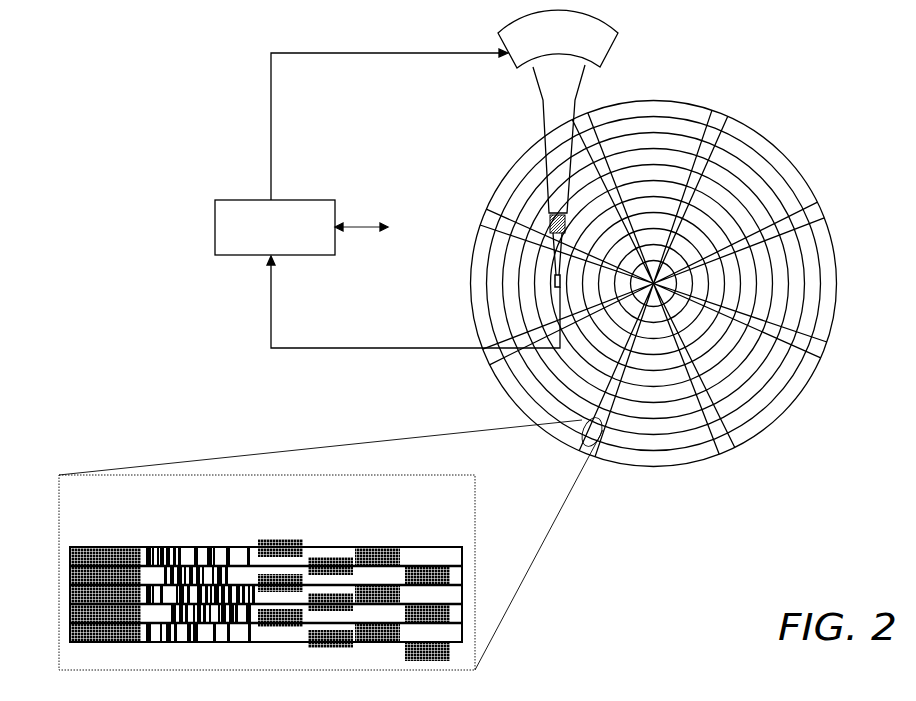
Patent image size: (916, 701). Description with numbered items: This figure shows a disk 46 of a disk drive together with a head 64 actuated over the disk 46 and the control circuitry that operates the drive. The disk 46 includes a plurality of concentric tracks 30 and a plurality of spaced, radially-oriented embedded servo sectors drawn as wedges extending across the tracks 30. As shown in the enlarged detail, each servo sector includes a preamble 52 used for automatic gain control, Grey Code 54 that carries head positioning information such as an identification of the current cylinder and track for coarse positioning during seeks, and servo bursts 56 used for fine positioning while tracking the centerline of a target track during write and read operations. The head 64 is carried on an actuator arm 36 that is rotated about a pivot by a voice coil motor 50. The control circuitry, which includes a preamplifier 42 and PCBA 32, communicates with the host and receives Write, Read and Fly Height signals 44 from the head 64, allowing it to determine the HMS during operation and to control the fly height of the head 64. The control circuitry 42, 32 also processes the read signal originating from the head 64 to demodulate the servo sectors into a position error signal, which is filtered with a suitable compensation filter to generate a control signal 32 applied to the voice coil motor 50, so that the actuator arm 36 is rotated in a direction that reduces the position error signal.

The tracks 30 is at (655, 110).
The disk 46 is at (780, 142).
The voice coil motor 50 is at (510, 63).
The actuator arm 36 is at (543, 127).
The head 64 is at (555, 288).
The preamplifier 42 is at (307, 200).
The PCBA 32 is at (271, 113).
The write, read and fly height signals 44 is at (382, 348).
The preamble 52 is at (108, 518).
The Grey Code 54 is at (198, 518).
The servo bursts 56 is at (374, 518).